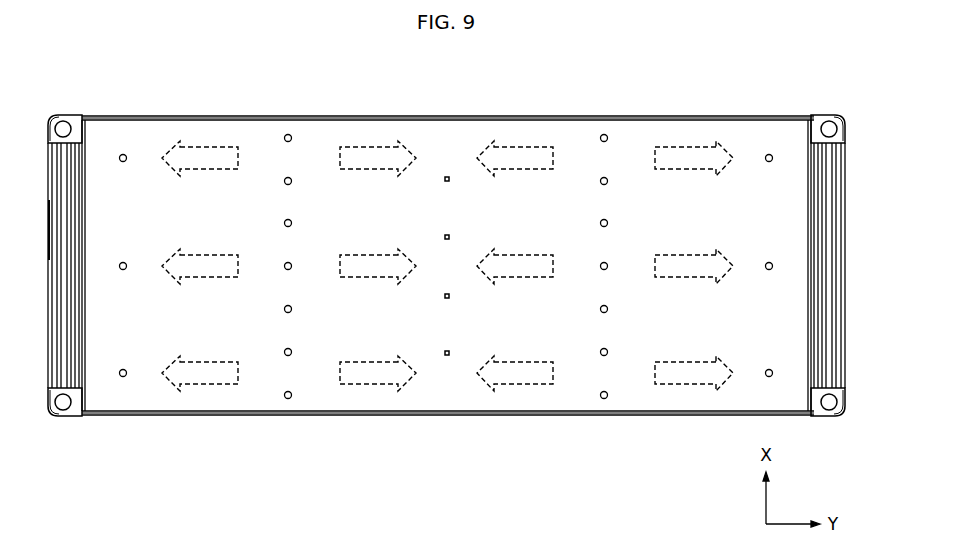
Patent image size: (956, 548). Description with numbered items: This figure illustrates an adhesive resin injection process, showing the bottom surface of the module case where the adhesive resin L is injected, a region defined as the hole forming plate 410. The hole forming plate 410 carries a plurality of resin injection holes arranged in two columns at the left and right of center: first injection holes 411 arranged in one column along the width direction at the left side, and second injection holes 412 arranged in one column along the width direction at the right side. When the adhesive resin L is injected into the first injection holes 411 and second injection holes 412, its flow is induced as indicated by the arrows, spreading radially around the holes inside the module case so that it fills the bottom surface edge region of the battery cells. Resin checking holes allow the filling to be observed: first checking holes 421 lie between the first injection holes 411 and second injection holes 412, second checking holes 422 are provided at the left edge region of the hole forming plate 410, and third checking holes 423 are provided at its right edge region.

The hole forming plate 410 is at (364, 138).
The first injection holes 411 is at (288, 134).
The second injection holes 412 is at (604, 134).
The first checking holes 421 is at (447, 176).
The second checking holes 422 is at (123, 154).
The third checking holes 423 is at (769, 154).
The adhesive resin L is at (207, 147).